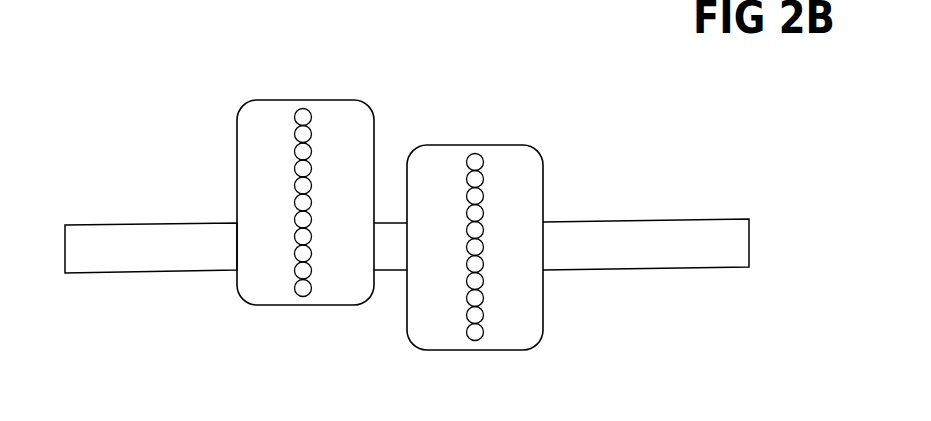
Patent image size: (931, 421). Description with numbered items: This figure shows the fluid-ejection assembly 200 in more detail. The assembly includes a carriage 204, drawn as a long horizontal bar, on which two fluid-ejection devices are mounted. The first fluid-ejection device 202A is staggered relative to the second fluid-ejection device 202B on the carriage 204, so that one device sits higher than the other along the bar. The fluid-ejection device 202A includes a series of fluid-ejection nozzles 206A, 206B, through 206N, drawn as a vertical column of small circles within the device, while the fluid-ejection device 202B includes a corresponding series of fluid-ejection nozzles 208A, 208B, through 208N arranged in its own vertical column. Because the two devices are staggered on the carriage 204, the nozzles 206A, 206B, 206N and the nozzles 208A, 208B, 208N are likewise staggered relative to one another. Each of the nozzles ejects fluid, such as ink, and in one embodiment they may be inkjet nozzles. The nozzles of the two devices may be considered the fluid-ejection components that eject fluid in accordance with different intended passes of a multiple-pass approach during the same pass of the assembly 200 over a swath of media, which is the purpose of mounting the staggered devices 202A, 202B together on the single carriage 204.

The fluid-ejection assembly 200 is at (741, 191).
The carriage 204 is at (110, 261).
The fluid-ejection device 202A is at (305, 100).
The fluid-ejection device 202B is at (477, 145).
The fluid-ejection nozzle 206A is at (297, 117).
The fluid-ejection nozzle 206B is at (309, 134).
The fluid-ejection nozzle 206N is at (311, 289).
The fluid-ejection nozzle 208A is at (468, 164).
The fluid-ejection nozzle 208B is at (481, 180).
The fluid-ejection nozzle 208N is at (483, 333).